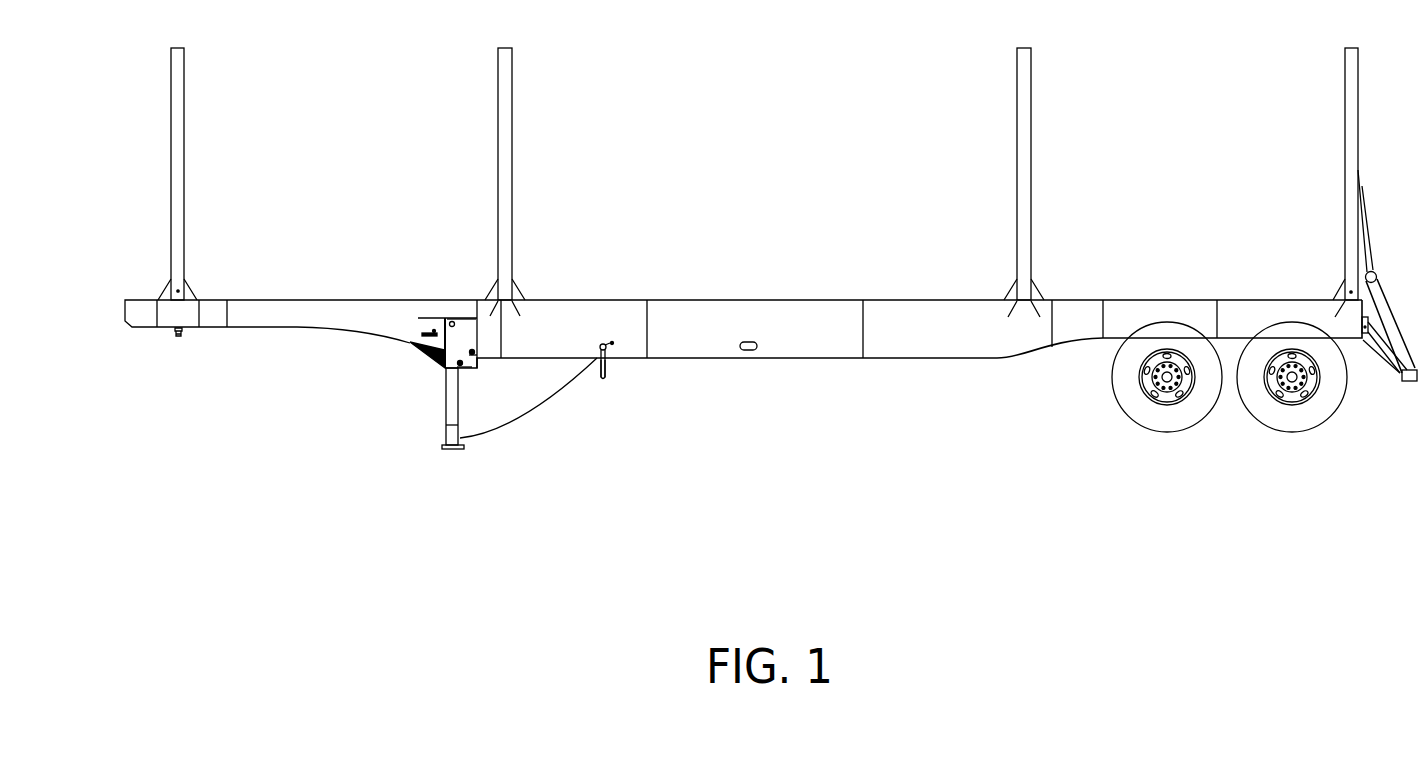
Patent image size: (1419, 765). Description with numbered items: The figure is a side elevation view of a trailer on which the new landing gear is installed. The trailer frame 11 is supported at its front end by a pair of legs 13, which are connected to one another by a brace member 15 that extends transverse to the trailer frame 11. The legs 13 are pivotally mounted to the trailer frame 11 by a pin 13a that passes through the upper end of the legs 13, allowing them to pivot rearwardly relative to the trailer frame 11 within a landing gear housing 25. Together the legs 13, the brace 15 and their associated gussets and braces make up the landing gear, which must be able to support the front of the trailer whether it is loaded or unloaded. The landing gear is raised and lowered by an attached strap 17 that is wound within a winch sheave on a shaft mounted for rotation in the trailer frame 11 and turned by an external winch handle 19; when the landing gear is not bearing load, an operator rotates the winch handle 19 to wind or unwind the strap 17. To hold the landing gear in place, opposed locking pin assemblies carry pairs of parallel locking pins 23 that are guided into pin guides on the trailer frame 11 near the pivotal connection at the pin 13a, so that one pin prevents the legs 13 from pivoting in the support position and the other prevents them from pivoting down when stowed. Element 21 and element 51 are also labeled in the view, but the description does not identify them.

The trailer frame 11 is at (750, 296).
The legs 13 is at (446, 402).
The pin 13a is at (453, 320).
The brace member 15 is at (442, 447).
The strap 17 is at (553, 408).
The winch handle 19 is at (607, 368).
The hook bracket 21 is at (430, 331).
The locking pins 23 is at (477, 352).
The landing gear housing 25 is at (470, 335).
The pivot pin 51 is at (609, 327).